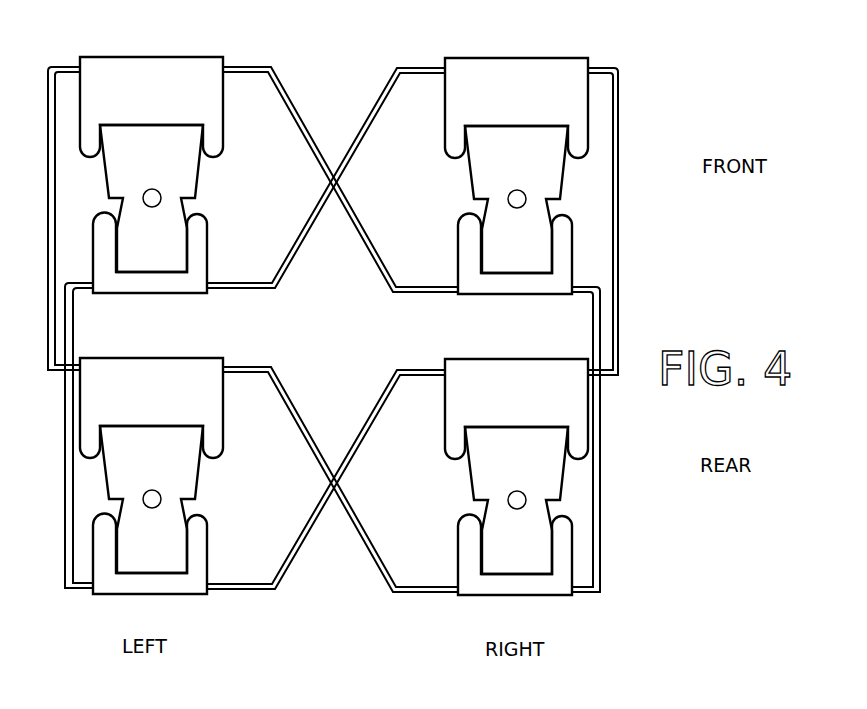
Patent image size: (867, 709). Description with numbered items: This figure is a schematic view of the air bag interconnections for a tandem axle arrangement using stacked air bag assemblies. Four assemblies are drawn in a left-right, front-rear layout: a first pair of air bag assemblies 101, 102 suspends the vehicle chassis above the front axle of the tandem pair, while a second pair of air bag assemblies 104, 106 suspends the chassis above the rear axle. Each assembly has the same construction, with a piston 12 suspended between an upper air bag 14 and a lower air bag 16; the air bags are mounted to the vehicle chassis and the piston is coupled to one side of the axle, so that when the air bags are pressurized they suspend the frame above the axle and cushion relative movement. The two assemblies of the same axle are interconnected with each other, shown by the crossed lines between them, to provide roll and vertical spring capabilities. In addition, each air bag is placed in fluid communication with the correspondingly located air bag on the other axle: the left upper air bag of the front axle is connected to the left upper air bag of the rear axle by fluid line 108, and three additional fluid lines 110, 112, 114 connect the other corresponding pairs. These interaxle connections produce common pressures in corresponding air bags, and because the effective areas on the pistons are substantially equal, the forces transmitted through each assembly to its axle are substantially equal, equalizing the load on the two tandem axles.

The piston 12 is at (183, 180).
The upper air bag 14 is at (212, 112).
The lower air bag 16 is at (200, 245).
The air bag assembly 101 is at (186, 55).
The air bag assembly 102 is at (530, 55).
The air bag assembly 104 is at (186, 356).
The air bag assembly 106 is at (521, 356).
The fluid line 108 is at (52, 198).
The fluid line 110 is at (620, 180).
The fluid line 112 is at (72, 593).
The fluid line 114 is at (601, 500).